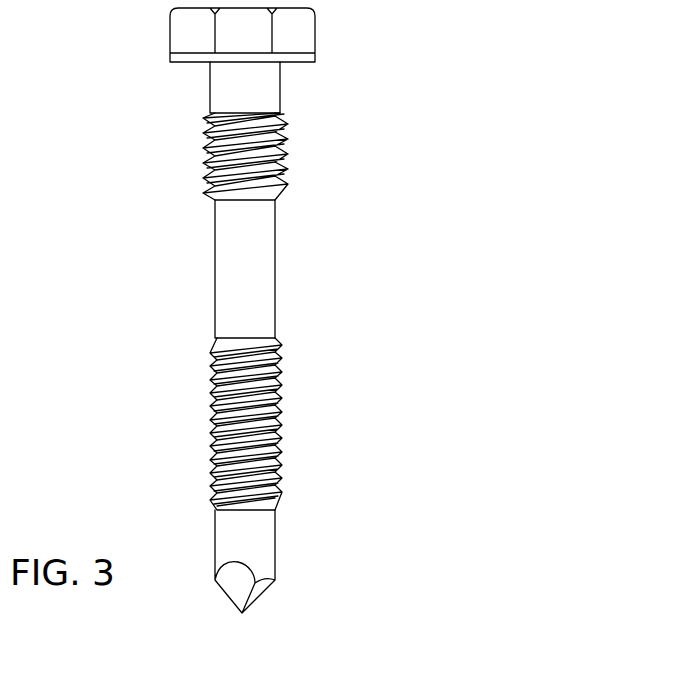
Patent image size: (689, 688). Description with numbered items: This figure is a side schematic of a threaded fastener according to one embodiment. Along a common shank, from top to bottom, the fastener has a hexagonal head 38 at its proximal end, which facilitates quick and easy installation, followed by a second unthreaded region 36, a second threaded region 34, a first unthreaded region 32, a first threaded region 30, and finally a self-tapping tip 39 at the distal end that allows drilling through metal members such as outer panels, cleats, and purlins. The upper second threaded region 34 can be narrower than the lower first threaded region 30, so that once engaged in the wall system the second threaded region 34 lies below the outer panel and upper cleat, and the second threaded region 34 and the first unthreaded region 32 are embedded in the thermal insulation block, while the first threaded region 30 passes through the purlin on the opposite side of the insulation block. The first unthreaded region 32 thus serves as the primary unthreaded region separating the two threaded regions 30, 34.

The hexagonal head 38 is at (292, 25).
The second unthreaded region 36 is at (280, 72).
The second threaded region 34 is at (284, 136).
The first unthreaded region 32 is at (263, 261).
The first threaded region 30 is at (262, 401).
The self-tapping tip 39 is at (245, 561).